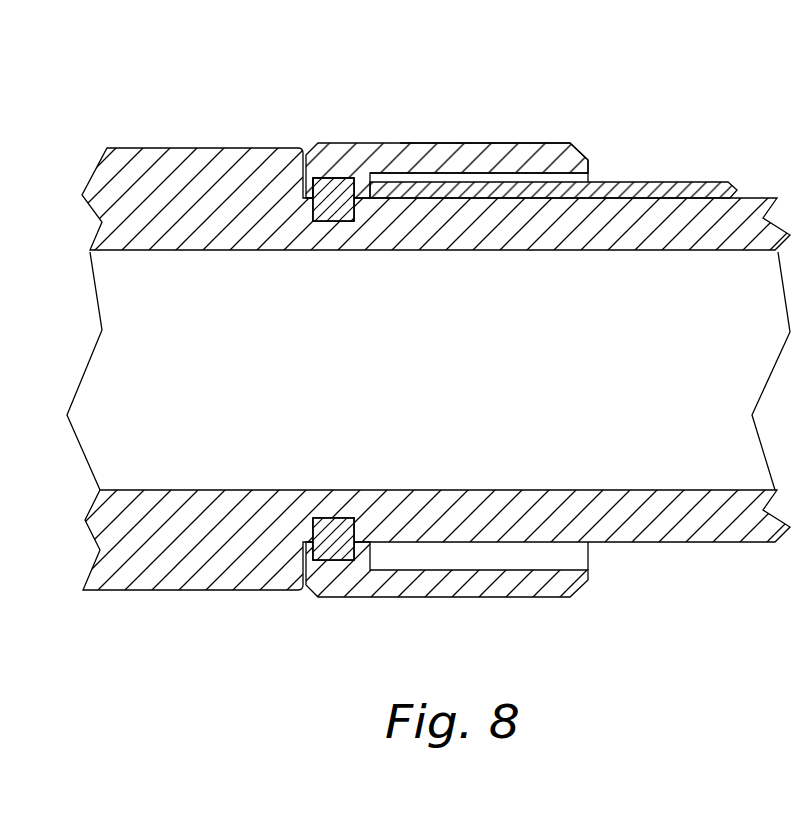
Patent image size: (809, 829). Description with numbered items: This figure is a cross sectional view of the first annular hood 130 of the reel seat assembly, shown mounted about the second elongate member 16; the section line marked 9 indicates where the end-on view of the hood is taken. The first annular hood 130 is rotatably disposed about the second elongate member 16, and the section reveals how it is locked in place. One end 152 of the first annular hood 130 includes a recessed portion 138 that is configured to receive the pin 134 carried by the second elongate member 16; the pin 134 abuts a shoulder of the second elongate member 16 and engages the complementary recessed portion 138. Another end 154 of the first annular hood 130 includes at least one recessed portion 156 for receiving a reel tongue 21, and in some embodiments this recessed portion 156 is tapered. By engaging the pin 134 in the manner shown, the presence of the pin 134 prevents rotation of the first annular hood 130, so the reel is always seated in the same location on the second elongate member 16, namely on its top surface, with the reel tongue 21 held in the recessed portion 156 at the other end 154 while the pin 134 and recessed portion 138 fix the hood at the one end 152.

The second elongate member 16 is at (198, 140).
The one end of the first annular hood 152 is at (361, 108).
The first annular hood 130 is at (499, 134).
The another end of the first annular hood 154 is at (594, 112).
The recessed portion 156 is at (587, 178).
The reel tongue 21 is at (675, 183).
The pin 134 is at (330, 200).
The recessed portion 138 is at (327, 173).
The section line 9- 9 is at (333, 127).